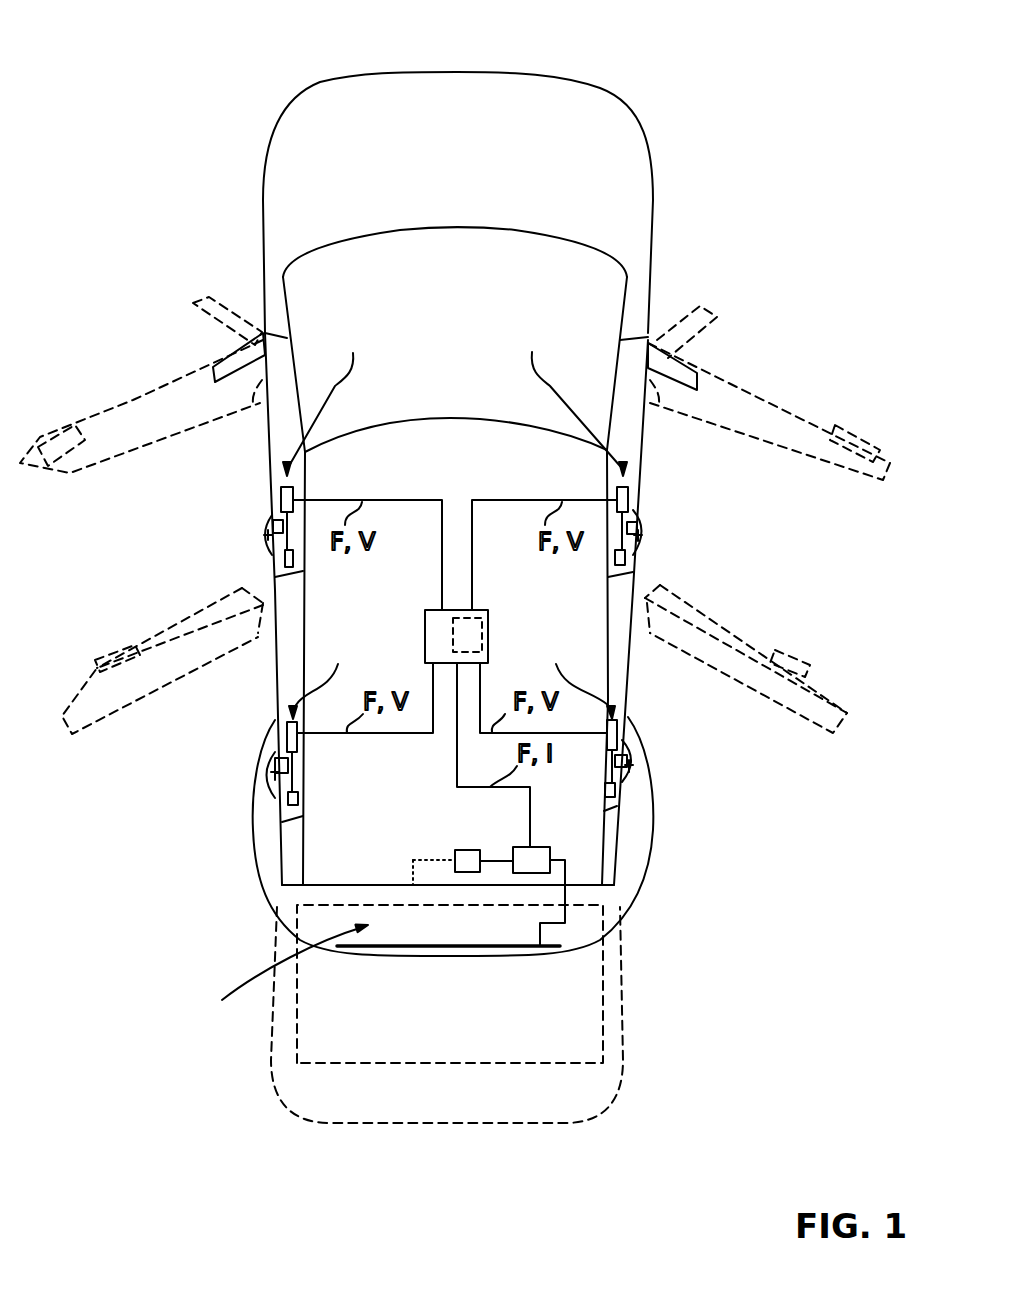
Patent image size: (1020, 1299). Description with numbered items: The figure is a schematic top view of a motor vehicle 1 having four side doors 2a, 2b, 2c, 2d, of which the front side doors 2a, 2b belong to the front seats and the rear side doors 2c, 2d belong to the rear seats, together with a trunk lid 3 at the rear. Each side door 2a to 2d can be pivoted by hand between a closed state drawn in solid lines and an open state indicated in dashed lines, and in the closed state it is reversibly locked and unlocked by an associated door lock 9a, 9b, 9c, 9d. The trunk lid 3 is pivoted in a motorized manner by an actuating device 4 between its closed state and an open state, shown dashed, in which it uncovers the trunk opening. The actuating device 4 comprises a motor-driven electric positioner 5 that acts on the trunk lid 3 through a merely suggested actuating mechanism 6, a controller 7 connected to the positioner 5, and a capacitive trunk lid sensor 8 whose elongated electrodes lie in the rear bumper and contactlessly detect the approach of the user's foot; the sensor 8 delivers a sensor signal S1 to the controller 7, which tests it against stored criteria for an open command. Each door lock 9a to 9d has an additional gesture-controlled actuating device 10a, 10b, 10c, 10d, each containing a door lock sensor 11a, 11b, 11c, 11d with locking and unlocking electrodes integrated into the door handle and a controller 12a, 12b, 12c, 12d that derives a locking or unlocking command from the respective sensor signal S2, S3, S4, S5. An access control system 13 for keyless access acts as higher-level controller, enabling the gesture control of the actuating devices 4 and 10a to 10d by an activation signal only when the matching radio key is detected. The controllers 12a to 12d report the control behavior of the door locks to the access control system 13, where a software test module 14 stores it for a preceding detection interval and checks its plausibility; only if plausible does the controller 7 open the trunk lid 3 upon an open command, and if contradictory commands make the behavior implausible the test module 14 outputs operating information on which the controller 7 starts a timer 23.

The motor vehicle 1 is at (560, 79).
The side door 2a is at (133, 400).
The side door 2b is at (777, 403).
The side door 2c is at (73, 690).
The side door 2d is at (830, 680).
The trunk lid 3 is at (580, 947).
The actuating device 4 is at (284, 968).
The electric positioner 5 is at (460, 850).
The actuating mechanism 6 is at (410, 860).
The controller 7 is at (550, 855).
The sensor 8 is at (437, 948).
The door lock 9a is at (283, 558).
The door lock 9b is at (627, 560).
The door lock 9c is at (287, 800).
The door lock 9d is at (617, 795).
The additional actuating device 10a is at (335, 400).
The additional actuating device 10b is at (573, 400).
The additional actuating device 10c is at (328, 677).
The additional actuating device 10d is at (580, 677).
The door lock sensor 11a is at (266, 535).
The door lock sensor 11b is at (640, 535).
The door lock sensor 11c is at (273, 775).
The door lock sensor 11d is at (633, 770).
The controller 12a is at (296, 492).
The controller 12b is at (612, 492).
The controller 12c is at (287, 733).
The controller 12d is at (617, 733).
The access control system 13 is at (425, 637).
The test module 14 is at (482, 635).
The timer 23 is at (535, 847).
The sensor signal S1 is at (567, 892).
The sensor signal S2 is at (273, 525).
The sensor signal S3 is at (637, 525).
The sensor signal S4 is at (276, 760).
The sensor signal S5 is at (627, 760).